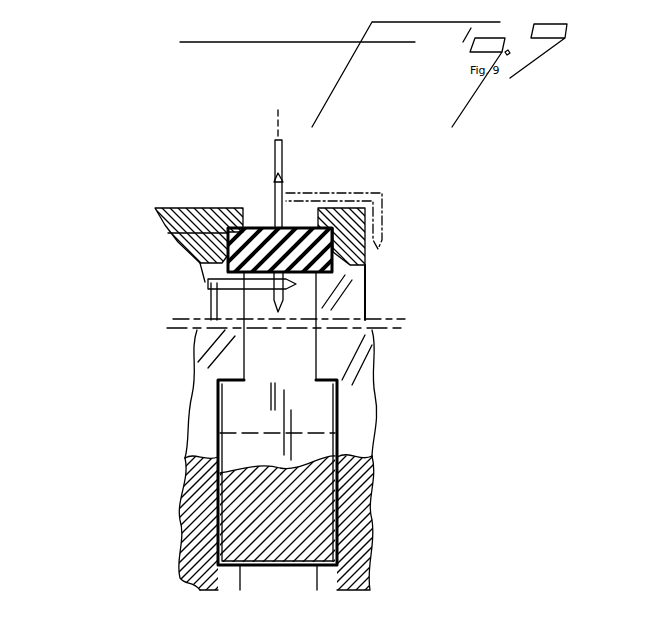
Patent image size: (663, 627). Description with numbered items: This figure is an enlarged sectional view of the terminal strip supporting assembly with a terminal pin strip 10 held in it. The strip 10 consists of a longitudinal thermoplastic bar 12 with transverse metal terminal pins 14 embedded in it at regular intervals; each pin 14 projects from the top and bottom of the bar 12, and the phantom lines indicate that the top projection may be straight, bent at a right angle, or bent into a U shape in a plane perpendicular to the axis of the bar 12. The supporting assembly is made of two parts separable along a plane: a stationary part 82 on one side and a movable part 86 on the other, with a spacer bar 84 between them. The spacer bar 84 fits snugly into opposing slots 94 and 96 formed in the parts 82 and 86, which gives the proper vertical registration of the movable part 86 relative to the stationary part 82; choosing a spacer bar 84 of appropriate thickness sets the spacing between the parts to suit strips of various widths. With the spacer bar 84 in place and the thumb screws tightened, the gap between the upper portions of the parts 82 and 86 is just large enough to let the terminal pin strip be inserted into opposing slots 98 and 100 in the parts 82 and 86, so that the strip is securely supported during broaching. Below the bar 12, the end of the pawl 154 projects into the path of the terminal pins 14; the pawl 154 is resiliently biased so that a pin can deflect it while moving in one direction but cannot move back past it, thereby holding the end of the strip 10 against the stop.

The terminal pin assembly or strip 10 is at (248, 174).
The longitudinal thermoplastic bar 12 is at (262, 228).
The terminal pins 14 is at (291, 188).
The stationary part 82 is at (196, 350).
The spacer bar 84 is at (290, 480).
The movable part 86 is at (370, 357).
The slot 94 is at (218, 403).
The slot 96 is at (345, 400).
The slot 98 is at (178, 235).
The slot 100 is at (365, 262).
The pawl 154 is at (208, 283).